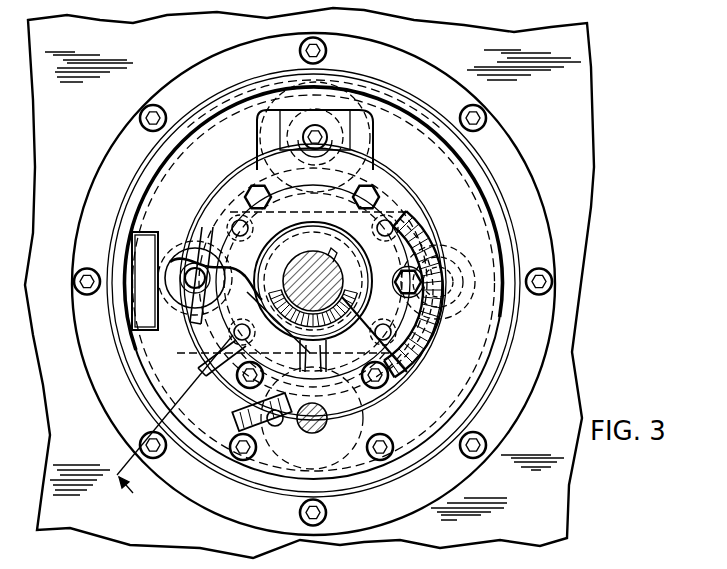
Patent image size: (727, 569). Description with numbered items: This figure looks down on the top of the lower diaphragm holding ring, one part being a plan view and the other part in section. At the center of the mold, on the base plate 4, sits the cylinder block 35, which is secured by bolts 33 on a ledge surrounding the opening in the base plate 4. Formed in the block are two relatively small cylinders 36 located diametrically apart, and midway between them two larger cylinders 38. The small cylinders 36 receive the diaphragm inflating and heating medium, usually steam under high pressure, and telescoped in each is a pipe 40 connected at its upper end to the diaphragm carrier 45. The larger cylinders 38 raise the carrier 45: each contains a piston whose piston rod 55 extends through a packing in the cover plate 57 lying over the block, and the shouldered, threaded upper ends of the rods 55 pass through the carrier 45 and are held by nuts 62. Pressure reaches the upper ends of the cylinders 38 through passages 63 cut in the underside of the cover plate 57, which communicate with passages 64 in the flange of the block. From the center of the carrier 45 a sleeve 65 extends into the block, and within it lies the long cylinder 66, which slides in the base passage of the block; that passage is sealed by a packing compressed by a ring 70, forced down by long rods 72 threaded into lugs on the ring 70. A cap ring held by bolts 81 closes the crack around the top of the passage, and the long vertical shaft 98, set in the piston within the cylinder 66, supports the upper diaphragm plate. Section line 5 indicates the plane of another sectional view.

The base plate 4 is at (575, 210).
The section line 5- 5 is at (175, 421).
The bolts 33 is at (327, 51).
The cylinder block 35 is at (516, 167).
The small cylinders 36 is at (182, 318).
The larger cylinders 38 is at (357, 103).
The pipe 40 is at (200, 295).
The diaphragm carrier 45 is at (360, 148).
The piston rod 55 is at (323, 427).
The cover plate 57 is at (282, 425).
The nuts 62 is at (297, 135).
The passages 63 is at (237, 415).
The passages 64 is at (276, 426).
The sleeve 65 is at (300, 358).
The long cylinder 66 is at (322, 358).
The ring 70 is at (390, 191).
The long rods 72 is at (223, 227).
The bolts 81 is at (258, 195).
The long vertical shaft 98 is at (328, 255).